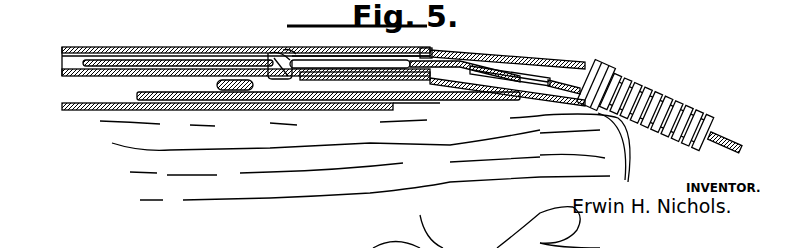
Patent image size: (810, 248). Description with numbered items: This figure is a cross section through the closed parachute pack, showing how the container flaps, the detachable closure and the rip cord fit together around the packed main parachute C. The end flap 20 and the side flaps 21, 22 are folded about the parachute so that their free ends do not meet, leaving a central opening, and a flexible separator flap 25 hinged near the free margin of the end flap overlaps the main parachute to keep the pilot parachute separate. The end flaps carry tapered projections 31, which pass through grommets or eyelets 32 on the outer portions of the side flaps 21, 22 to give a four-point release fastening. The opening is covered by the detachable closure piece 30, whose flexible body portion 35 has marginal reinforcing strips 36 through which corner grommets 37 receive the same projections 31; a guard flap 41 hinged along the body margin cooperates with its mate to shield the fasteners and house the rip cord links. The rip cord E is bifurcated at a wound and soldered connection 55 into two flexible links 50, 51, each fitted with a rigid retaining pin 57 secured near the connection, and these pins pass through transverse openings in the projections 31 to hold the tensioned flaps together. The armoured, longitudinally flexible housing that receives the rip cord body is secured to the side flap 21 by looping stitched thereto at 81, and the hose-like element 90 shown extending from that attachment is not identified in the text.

The detachable closure piece 30 is at (246, 38).
The flexible guard flap 41 is at (172, 52).
The marginal reinforcing strip 36 is at (57, 64).
The flexible polygonal body portion 35 is at (96, 77).
The grommet or eyelet fastener part 32 is at (276, 32).
The free end retaining pin 57 is at (272, 52).
The grommet or eyelet 37 is at (289, 48).
The tapered projection 31 is at (305, 56).
The rip cord link 50 is at (372, 62).
The rip cord link 51 is at (466, 60).
The connection 55 is at (514, 60).
The side or end flap 21 is at (446, 101).
The flexible separator flap 25 is at (165, 110).
The end flap 20 is at (393, 106).
The looping stitched attachment 81 is at (602, 72).
The flexible hose 90 is at (658, 94).
The rip cord E is at (733, 140).
The main parachute C is at (325, 200).
The side or end flap 22 is at (540, 0).